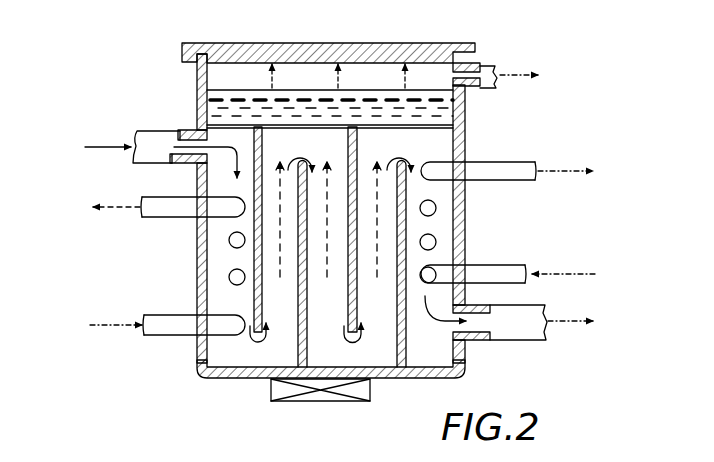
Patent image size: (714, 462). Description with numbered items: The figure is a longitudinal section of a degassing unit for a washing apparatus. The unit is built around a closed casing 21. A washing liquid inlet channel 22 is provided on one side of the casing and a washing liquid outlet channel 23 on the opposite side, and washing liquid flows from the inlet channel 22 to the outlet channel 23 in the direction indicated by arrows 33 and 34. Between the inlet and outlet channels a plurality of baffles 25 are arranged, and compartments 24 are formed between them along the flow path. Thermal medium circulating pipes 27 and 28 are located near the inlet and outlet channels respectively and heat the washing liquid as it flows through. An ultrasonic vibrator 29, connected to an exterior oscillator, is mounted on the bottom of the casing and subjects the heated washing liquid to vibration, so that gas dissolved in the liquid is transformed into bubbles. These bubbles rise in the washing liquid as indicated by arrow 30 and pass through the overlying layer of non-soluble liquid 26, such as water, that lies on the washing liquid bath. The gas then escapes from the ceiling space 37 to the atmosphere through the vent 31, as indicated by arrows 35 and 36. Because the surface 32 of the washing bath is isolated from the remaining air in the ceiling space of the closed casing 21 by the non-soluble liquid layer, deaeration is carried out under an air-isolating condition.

The closed casing 21 is at (384, 43).
The washing liquid inlet channel 22 is at (160, 142).
The washing liquid outlet channel 23 is at (520, 333).
The gas passage compartment 24 is at (265, 357).
The baffles 25 is at (227, 342).
The non-soluble liquid layer 26 is at (440, 109).
The thermal medium circulating pipe 27 is at (162, 333).
The thermal medium circulating pipe 28 is at (505, 266).
The ultrasonic vibrator 29 is at (318, 396).
The arrow 30 is at (279, 260).
The vent 31 is at (474, 64).
The surface of the washing bath 32 is at (443, 122).
The arrow 33 is at (112, 147).
The arrow 34 is at (552, 321).
The arrow 35 is at (273, 82).
The arrow 36 is at (510, 72).
The ceiling space 37 is at (228, 66).